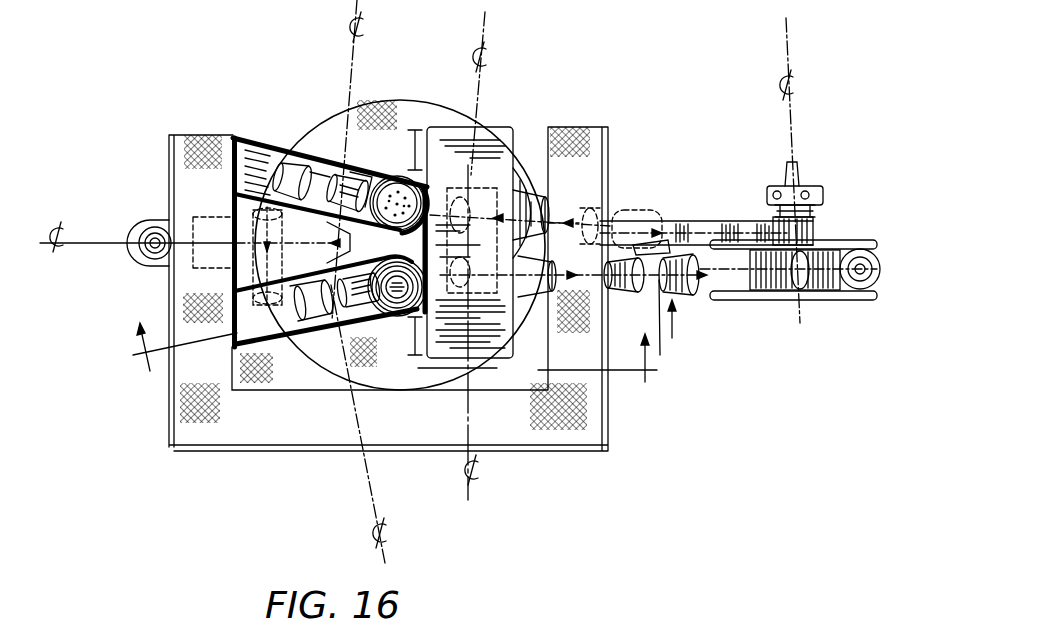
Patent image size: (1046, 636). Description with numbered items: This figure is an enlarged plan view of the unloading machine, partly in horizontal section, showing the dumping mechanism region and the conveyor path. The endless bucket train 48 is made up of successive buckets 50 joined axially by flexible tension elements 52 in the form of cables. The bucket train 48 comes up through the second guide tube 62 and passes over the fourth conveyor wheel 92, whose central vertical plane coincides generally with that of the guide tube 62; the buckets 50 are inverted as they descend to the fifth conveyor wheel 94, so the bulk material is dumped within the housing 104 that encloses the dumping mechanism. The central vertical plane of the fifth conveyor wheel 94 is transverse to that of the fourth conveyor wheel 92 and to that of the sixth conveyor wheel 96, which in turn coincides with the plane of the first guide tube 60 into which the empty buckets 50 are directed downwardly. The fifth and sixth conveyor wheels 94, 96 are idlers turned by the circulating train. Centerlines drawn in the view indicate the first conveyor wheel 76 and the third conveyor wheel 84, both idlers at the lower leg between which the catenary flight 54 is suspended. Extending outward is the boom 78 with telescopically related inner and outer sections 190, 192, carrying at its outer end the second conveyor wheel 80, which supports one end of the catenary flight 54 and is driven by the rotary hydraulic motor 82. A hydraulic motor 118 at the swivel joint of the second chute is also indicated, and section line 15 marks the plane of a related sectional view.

The housing 104 is at (239, 127).
The fourth conveyor wheel 92 is at (315, 174).
The second guide tube 62 is at (390, 176).
The fifth conveyor wheel 94 is at (234, 226).
The hydraulic motor 118 is at (151, 231).
The sixth conveyor wheel 96 is at (296, 340).
The first guide tube 60 is at (392, 320).
The third conveyor wheel 84 is at (540, 185).
The first conveyor wheel 76 is at (514, 332).
The catenary flight 54 is at (613, 205).
The boom 78 is at (672, 212).
The inner section 190 is at (690, 212).
The outer section 192 is at (746, 216).
The rotary hydraulic motor 82 is at (807, 190).
The second conveyor wheel 80 is at (800, 372).
The endless bucket train 48 is at (672, 336).
The buckets 50 is at (687, 293).
The flexible tension elements 52 is at (660, 355).
The section line 15 is at (392, 340).